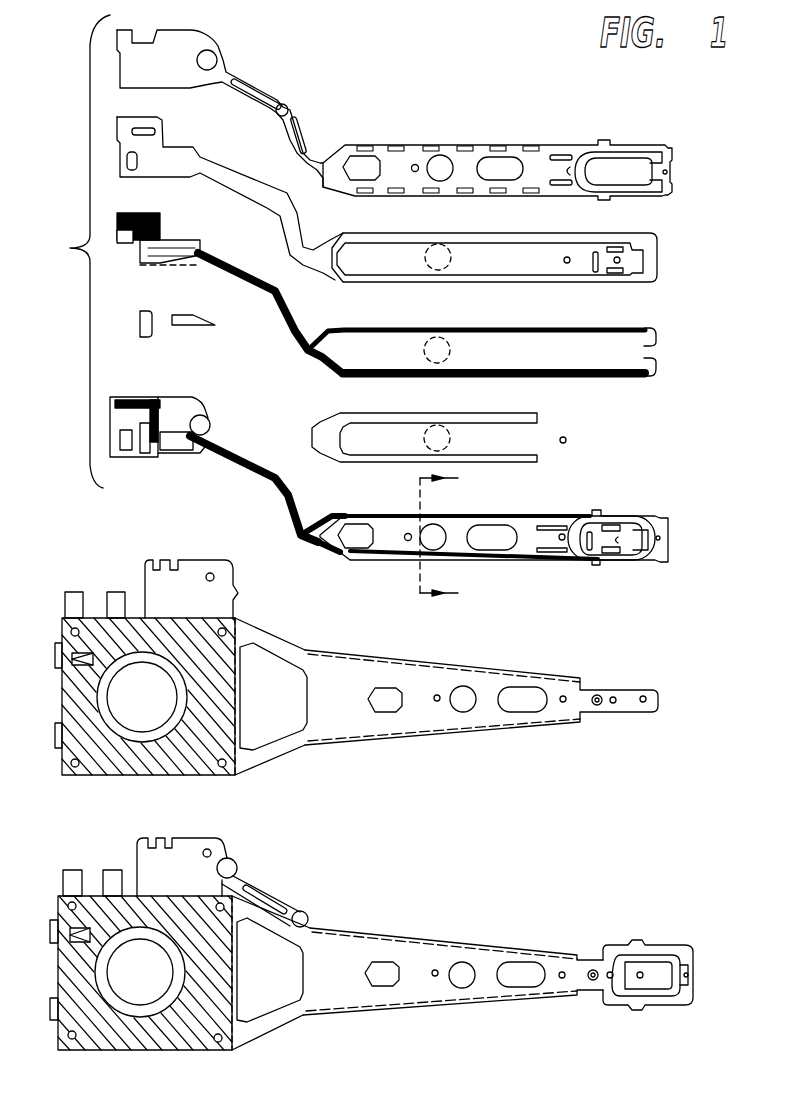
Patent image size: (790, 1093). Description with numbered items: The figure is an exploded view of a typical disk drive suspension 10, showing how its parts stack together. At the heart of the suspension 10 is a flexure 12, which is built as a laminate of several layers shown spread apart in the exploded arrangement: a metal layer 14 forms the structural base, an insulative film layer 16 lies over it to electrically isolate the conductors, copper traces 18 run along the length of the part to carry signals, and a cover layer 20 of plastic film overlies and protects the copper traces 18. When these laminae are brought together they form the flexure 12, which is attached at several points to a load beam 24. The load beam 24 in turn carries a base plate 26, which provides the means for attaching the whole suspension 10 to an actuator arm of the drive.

The suspension 10 is at (40, 908).
The flexure 12 is at (370, 512).
The metal layer 14 is at (382, 142).
The insulative film layer 16 is at (603, 287).
The copper traces 18 is at (573, 377).
The cover layer 20 is at (515, 463).
The load beam 24 is at (375, 740).
The base plate 26 is at (62, 640).